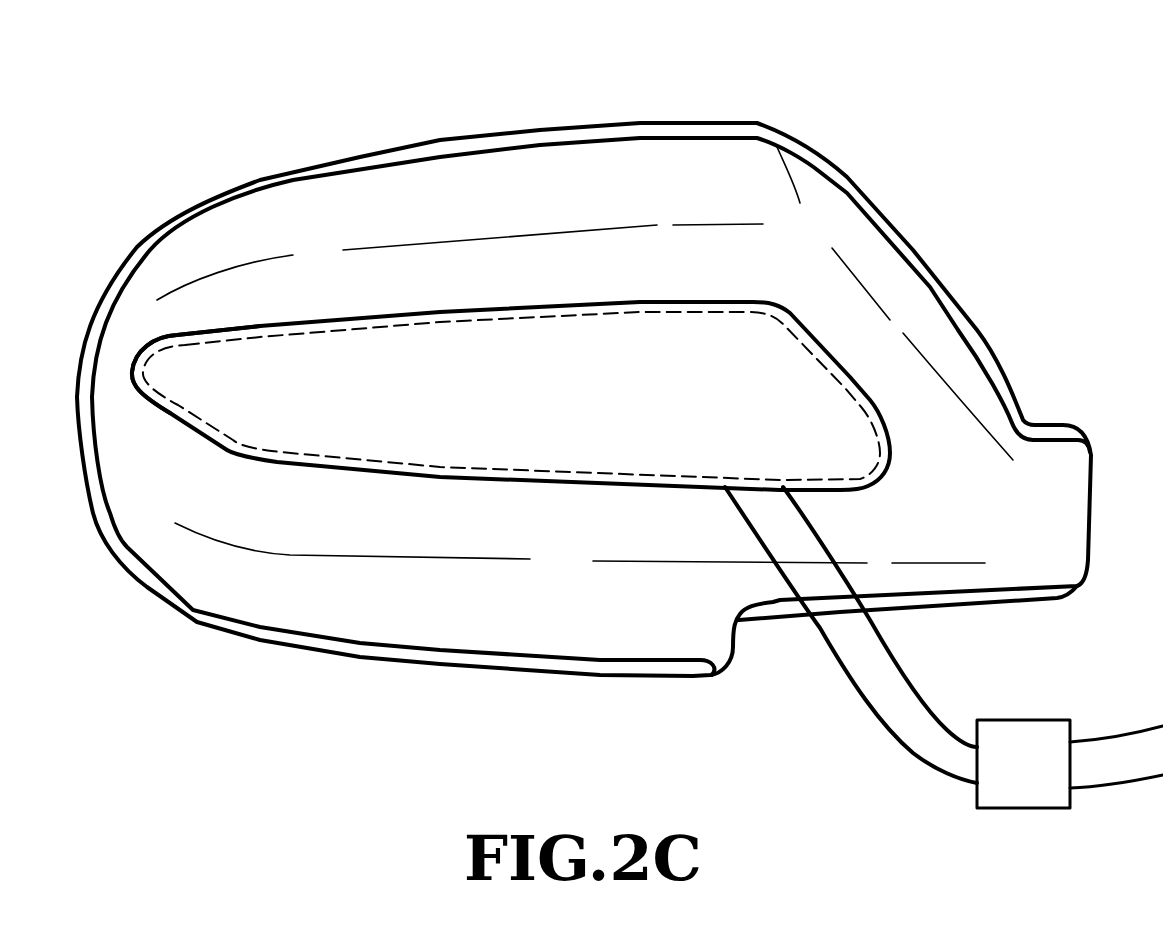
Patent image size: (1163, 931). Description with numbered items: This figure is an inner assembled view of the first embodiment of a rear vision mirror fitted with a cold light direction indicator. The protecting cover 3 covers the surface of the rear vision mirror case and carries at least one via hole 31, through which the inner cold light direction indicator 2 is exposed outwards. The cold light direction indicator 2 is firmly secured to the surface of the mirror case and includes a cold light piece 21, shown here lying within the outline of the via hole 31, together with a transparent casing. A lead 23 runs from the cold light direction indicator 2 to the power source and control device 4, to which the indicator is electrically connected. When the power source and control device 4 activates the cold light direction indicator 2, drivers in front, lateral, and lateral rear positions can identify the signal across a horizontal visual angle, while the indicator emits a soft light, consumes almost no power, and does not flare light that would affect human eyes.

The cold light direction indicator 2 is at (780, 307).
The cold light piece 21 is at (780, 407).
The protecting cover 3 is at (645, 122).
The via hole 31 is at (175, 337).
The cable 23 is at (873, 717).
The power source and control device 4 is at (1030, 734).